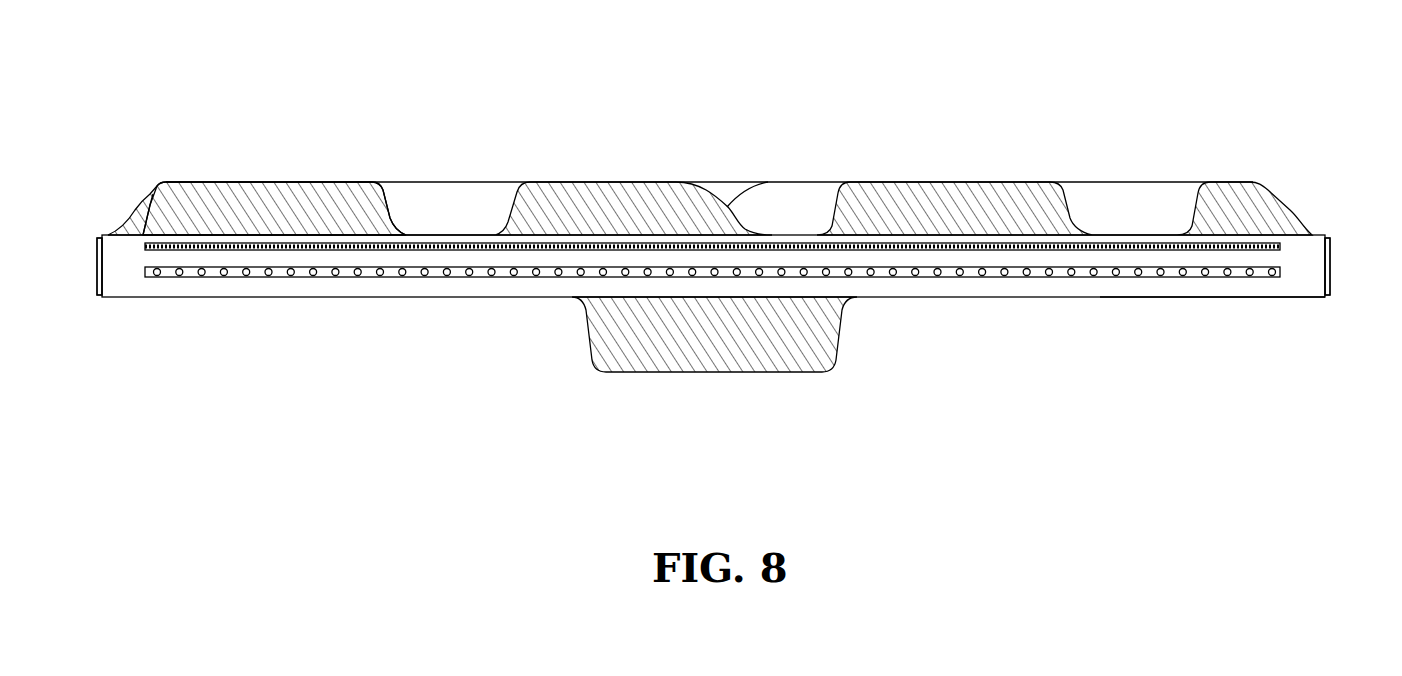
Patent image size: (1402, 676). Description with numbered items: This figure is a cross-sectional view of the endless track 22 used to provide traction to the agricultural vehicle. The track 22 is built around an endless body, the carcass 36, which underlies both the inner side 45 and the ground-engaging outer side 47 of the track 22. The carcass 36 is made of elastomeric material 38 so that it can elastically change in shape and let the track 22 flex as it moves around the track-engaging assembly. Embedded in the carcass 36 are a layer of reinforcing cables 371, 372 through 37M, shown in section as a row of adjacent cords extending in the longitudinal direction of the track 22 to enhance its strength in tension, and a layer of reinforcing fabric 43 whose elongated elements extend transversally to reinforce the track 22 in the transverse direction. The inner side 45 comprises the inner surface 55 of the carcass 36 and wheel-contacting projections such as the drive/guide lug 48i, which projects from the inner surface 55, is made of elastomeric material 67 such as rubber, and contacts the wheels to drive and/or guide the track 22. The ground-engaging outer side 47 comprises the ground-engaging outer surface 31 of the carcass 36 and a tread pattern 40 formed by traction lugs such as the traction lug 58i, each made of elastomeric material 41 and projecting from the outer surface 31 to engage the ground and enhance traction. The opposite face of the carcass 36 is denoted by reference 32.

The track 22 is at (1202, 90).
The ground-engaging outer surface 31 is at (1130, 233).
The lower surface 32 is at (1175, 298).
The carcass 36 is at (126, 276).
The reinforcing cable 371 is at (157, 276).
The reinforcing cable 372 is at (179, 276).
The reinforcing cable 37M is at (350, 276).
The elastomeric material 38 is at (1312, 246).
The tread pattern 40 is at (621, 210).
The elastomeric material 41 is at (350, 206).
The reinforcing fabric 43 is at (1282, 249).
The inner side 45 is at (980, 305).
The ground-engaging outer side 47 is at (458, 206).
The drive/guide lug 48i is at (686, 386).
The inner surface 55 is at (392, 298).
The traction lug 58i is at (232, 182).
The elastomeric material 67 is at (753, 368).